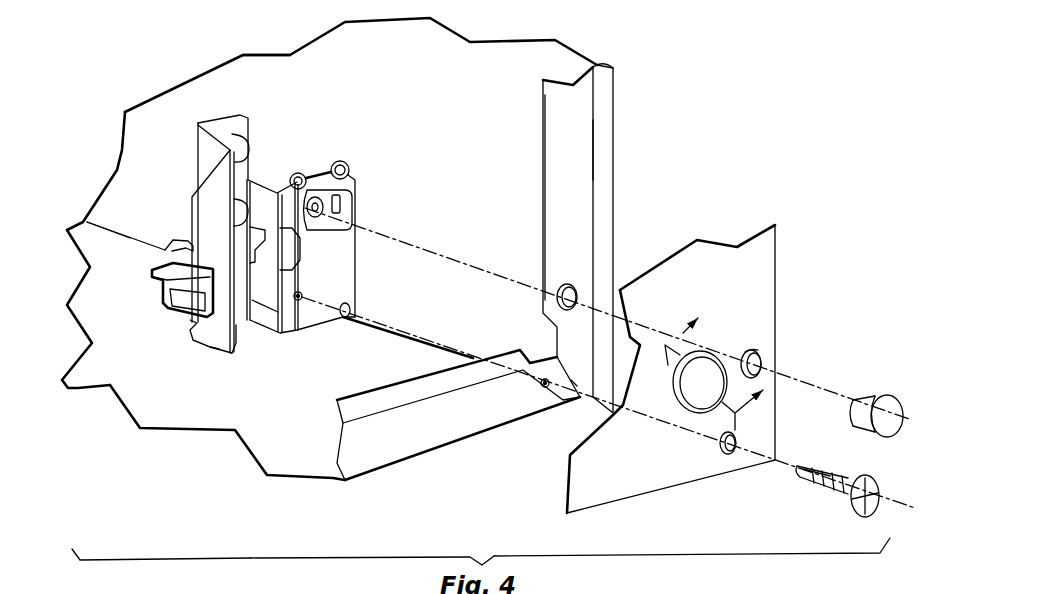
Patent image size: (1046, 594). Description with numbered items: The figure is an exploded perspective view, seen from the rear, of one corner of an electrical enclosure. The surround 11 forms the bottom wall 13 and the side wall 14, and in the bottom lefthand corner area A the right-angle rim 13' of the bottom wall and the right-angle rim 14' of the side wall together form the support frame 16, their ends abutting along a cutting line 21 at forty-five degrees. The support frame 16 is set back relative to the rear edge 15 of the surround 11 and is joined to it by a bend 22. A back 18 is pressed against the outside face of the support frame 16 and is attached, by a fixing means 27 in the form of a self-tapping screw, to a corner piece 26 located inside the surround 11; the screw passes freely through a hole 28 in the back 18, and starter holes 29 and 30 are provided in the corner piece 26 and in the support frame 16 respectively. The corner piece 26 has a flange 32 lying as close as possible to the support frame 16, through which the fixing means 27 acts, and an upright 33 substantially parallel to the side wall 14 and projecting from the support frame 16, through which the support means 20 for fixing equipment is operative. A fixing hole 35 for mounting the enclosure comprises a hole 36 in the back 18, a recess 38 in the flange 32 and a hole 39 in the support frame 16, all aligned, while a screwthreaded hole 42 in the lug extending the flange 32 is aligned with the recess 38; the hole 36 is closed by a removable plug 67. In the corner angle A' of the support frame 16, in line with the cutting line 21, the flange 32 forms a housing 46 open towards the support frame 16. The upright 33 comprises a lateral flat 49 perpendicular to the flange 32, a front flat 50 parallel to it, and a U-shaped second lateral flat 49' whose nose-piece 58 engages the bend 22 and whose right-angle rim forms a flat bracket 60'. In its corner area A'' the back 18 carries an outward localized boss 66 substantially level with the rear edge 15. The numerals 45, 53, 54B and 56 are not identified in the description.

The surround 11 is at (262, 52).
The bottom wall 13 is at (213, 351).
The right-angle rim of the bottom wall 13' is at (458, 442).
The side wall 14 is at (337, 196).
The right-angle rim of the side wall 14' is at (636, 138).
The rear edge 15 is at (619, 107).
The support frame 16 is at (531, 232).
The back 18 is at (628, 503).
The support means 20 is at (248, 162).
The cutting line 21 is at (575, 384).
The bend 22 is at (375, 468).
The corner piece 26 is at (208, 353).
The fixing means 27 is at (856, 473).
The hole 28 is at (735, 454).
The starter hole 29 is at (301, 299).
The starter hole 30 is at (543, 387).
The flange 32 is at (358, 195).
The upright 33 is at (218, 113).
The fixing hole 35 is at (759, 347).
The hole 36 is at (768, 357).
The recess 38 is at (345, 212).
The hole 39 is at (534, 288).
The screwthreaded hole 42 is at (313, 210).
The hook loops 45 is at (303, 174).
The housing 46 is at (360, 314).
The lateral flat 49 is at (295, 342).
The second lateral flat 49' is at (198, 433).
The front flat 50 is at (236, 332).
The section 53 is at (637, 566).
The section 54B is at (372, 575).
The section 56 is at (161, 571).
The nose-piece 58 is at (232, 355).
The bracket 60' is at (107, 348).
The localized boss 66 is at (698, 390).
The removable plug 67 is at (882, 385).
The corner area A is at (94, 252).
The corner angle A' is at (608, 314).
The corner area A'' is at (608, 415).